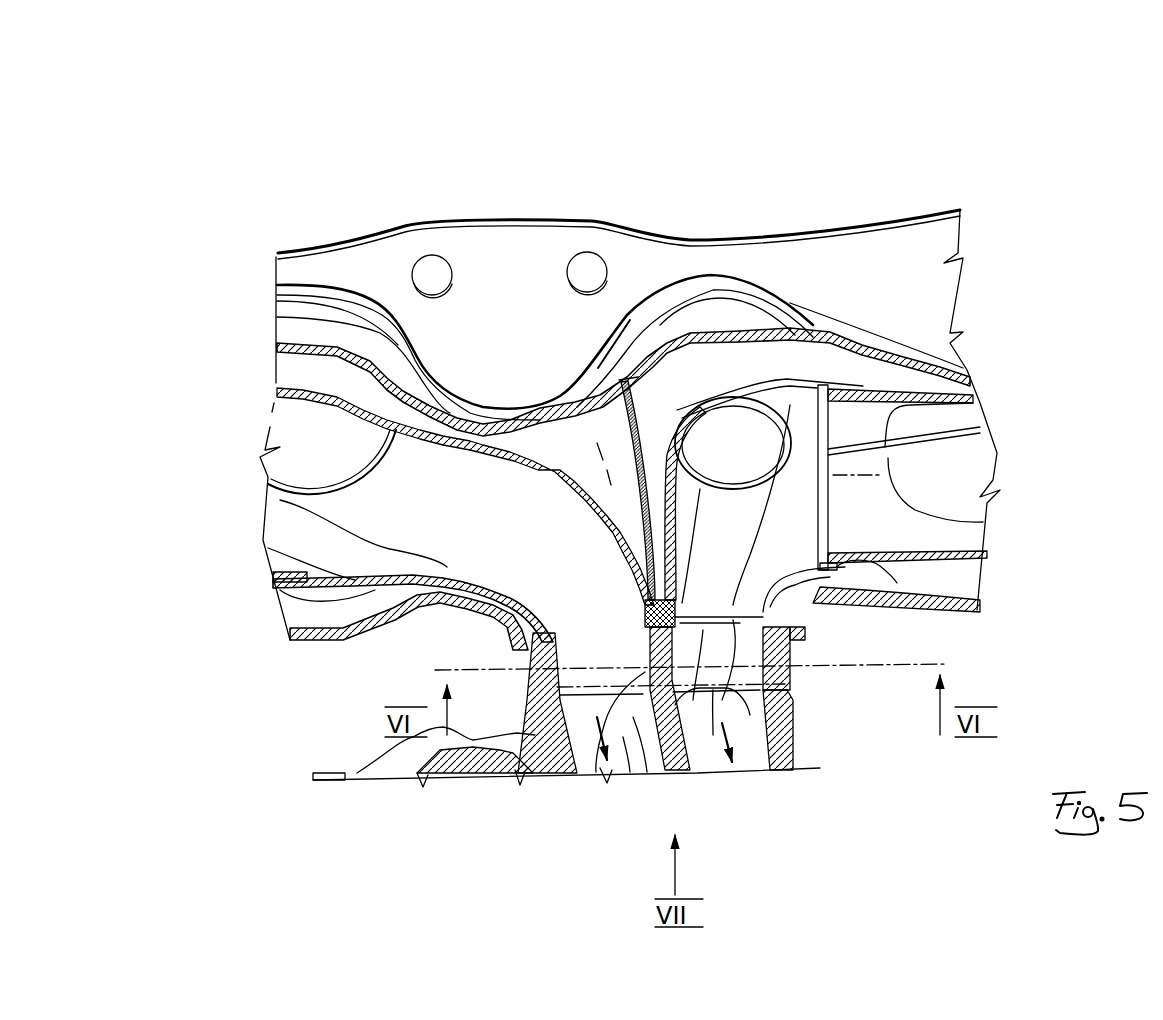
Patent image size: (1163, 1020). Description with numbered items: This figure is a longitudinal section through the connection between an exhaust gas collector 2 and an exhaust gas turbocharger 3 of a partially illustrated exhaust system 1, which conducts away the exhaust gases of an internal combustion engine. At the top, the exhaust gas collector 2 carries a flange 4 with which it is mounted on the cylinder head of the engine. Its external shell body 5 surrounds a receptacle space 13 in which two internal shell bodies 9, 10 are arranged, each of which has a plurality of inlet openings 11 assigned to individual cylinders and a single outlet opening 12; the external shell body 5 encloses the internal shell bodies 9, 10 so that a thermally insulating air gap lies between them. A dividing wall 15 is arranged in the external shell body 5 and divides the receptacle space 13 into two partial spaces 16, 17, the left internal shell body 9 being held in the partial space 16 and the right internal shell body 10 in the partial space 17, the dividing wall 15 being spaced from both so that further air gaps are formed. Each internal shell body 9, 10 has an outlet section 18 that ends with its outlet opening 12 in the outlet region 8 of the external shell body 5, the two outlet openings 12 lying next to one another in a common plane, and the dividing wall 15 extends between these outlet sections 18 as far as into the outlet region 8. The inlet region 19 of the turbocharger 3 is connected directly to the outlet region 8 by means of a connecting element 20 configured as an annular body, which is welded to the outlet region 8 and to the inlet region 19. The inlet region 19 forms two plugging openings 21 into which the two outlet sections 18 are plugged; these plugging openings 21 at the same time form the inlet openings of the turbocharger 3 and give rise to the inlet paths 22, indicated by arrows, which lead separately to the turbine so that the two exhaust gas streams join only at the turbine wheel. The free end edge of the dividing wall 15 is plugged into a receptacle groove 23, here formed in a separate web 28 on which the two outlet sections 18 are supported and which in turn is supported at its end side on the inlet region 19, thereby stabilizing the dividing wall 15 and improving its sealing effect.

The exhaust system 1 is at (872, 127).
The exhaust gas collector 2 is at (713, 185).
The exhaust gas turbocharger 3 is at (810, 723).
The flange 4 is at (375, 243).
The external shell body 5 is at (863, 349).
The outlet region 8 is at (507, 615).
The internal shell body 9 is at (727, 418).
The internal shell body 10 is at (537, 460).
The inlet openings 11 is at (300, 437).
The outlet opening 12 is at (581, 672).
The receptacle space 13 is at (478, 403).
The dividing wall 15 is at (677, 405).
The partial space 16 is at (832, 365).
The partial space 17 is at (570, 437).
The outlet section 18 is at (567, 650).
The inlet region 19 is at (770, 605).
The connecting element 20 is at (805, 640).
The plugging openings 21 is at (707, 695).
The inlet paths 22 is at (597, 765).
The receptacle groove 23 is at (640, 623).
The web 28 is at (687, 500).